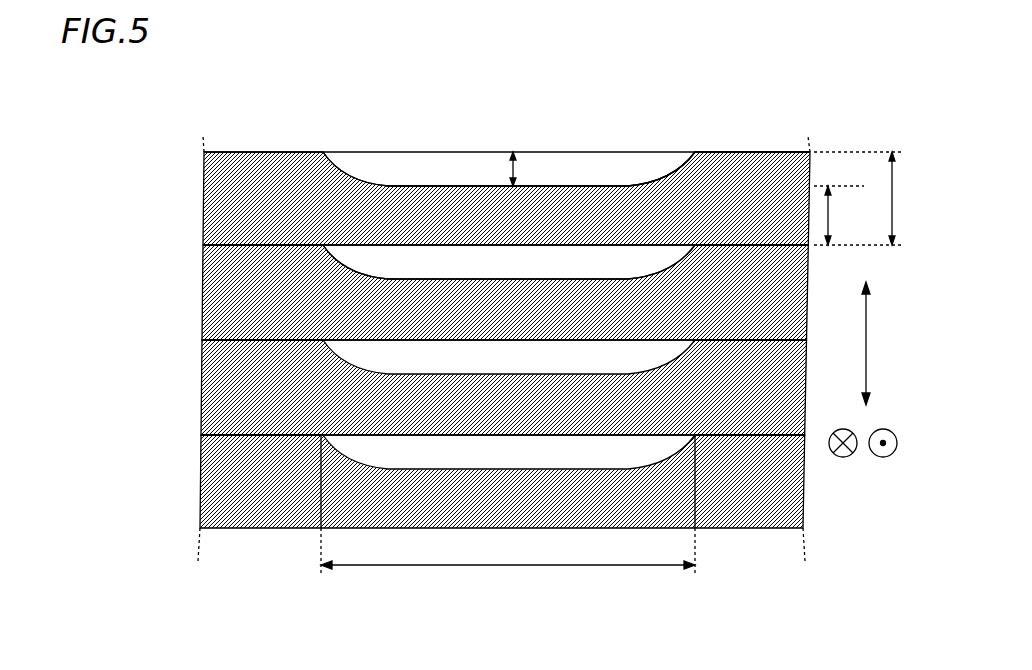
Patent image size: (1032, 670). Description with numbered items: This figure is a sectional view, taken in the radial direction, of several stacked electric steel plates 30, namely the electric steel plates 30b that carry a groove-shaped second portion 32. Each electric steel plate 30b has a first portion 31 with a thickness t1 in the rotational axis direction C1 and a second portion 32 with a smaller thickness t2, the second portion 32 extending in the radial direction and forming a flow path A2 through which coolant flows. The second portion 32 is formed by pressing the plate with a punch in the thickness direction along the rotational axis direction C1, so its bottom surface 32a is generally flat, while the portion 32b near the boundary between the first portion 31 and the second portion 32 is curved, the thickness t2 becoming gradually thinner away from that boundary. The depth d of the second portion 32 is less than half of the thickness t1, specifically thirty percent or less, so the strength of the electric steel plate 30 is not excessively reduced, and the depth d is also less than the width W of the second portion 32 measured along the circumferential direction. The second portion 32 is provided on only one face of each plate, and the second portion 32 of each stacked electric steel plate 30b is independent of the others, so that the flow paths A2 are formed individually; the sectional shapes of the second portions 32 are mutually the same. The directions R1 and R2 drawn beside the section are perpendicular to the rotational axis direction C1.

The electric steel plate 30 is at (426, 348).
The electric steel plate 30b is at (225, 190).
The first portion 31 is at (735, 144).
The second portion 32 is at (582, 178).
The bottom surface 32a is at (471, 177).
The portion near the boundary 32b is at (655, 160).
The flow path A2 is at (354, 155).
The depth d is at (524, 169).
The thickness t1 is at (868, 198).
The thickness t2 is at (839, 215).
The rotational axis direction C1 is at (889, 343).
The radial direction (into page) R1 is at (840, 463).
The radial direction (out of page) R2 is at (887, 463).
The width W is at (508, 518).